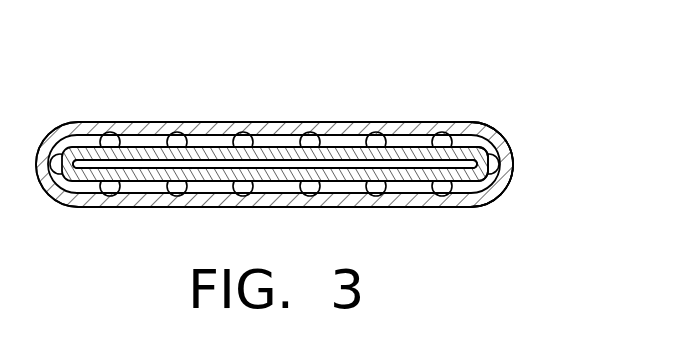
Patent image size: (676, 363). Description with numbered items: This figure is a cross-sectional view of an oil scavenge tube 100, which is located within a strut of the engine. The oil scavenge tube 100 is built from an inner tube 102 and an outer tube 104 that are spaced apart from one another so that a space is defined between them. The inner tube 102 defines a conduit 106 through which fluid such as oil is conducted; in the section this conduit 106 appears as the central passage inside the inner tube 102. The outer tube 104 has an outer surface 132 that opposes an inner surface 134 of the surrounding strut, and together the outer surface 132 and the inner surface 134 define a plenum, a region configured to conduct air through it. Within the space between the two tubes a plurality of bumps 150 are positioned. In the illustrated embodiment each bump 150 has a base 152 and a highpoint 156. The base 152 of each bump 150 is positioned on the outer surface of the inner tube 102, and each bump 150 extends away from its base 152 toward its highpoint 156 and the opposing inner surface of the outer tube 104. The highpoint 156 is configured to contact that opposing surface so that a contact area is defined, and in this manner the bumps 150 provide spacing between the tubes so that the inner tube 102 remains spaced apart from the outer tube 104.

The oil scavenge tube 100 is at (357, 63).
The inner tube 102 is at (401, 172).
The outer tube 104 is at (457, 207).
The conduit 106 is at (290, 165).
The outer surface 132 is at (131, 122).
The inner surface 134 is at (228, 183).
The bump 150 is at (472, 126).
The base 152 is at (445, 158).
The highpoint 156 is at (190, 140).